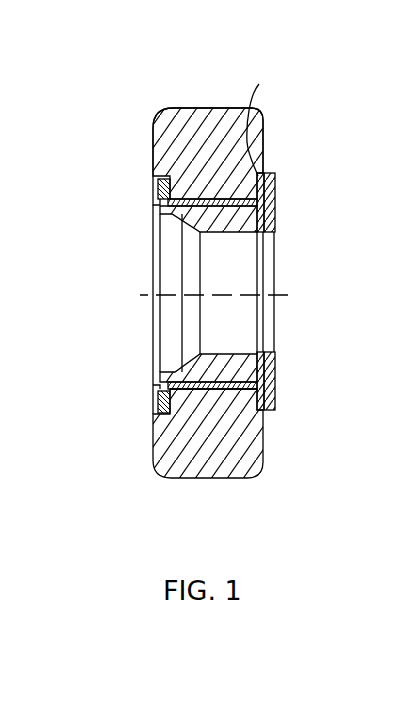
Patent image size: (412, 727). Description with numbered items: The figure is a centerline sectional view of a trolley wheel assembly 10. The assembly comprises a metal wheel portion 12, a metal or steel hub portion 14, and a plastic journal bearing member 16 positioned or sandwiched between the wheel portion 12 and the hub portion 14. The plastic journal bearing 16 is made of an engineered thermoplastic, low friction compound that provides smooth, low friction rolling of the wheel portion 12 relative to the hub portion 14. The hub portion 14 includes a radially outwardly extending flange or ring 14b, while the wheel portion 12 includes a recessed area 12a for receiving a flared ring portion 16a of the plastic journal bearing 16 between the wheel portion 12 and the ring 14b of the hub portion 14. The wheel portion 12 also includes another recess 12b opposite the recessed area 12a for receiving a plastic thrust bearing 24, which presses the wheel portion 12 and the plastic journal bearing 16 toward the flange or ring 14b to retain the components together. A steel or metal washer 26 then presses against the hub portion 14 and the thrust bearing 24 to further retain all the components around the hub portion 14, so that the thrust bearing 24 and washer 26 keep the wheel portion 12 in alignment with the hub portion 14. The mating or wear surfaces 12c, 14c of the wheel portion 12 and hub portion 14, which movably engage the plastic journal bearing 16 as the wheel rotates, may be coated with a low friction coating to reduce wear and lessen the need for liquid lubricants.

The trolley wheel assembly 10 is at (151, 54).
The wheel portion 12 is at (200, 109).
The recessed area 12a is at (152, 174).
The recess 12b is at (267, 117).
The mating or wear surface 12c is at (237, 388).
The hub portion 14 is at (278, 272).
The flange or ring 14b is at (156, 206).
The mating or wear surface 14c is at (223, 218).
The plastic journal bearing member 16 is at (158, 239).
The flared ring portion 16a is at (156, 193).
The plastic thrust bearing 24 is at (275, 183).
The washer 26 is at (270, 212).